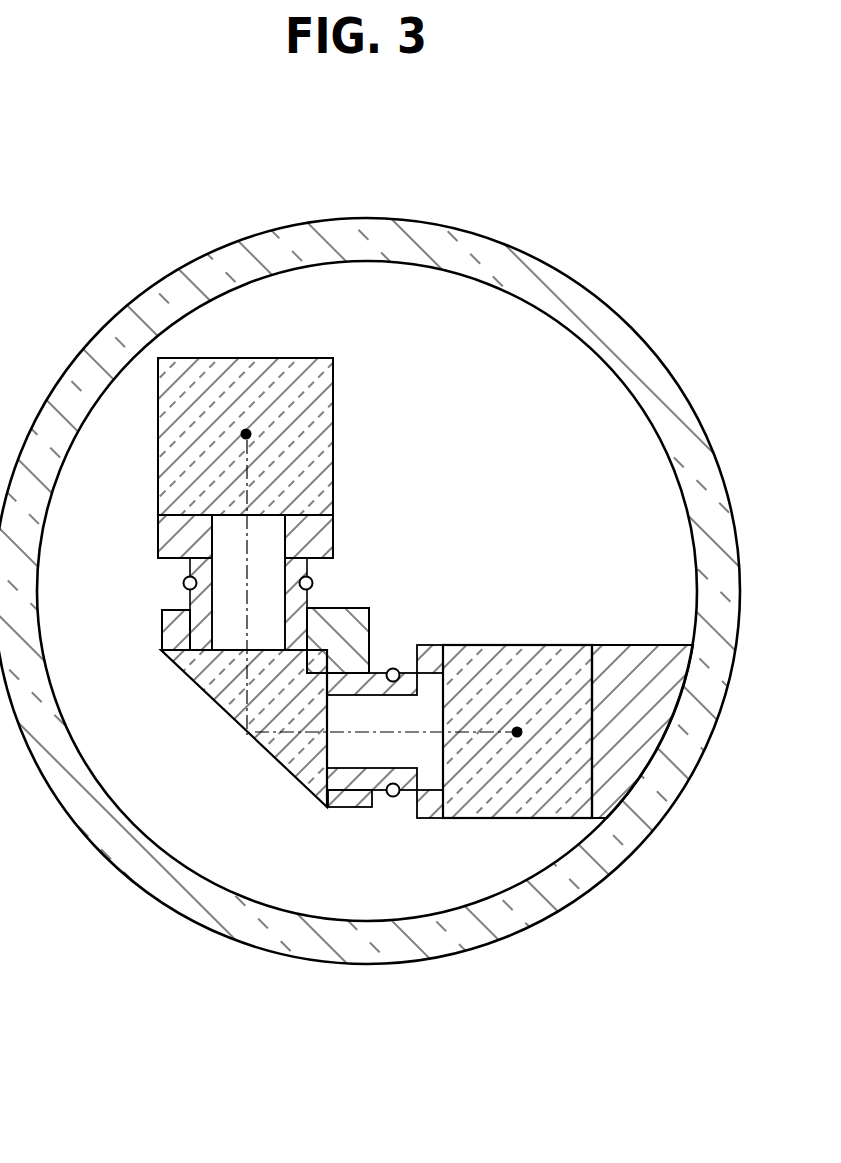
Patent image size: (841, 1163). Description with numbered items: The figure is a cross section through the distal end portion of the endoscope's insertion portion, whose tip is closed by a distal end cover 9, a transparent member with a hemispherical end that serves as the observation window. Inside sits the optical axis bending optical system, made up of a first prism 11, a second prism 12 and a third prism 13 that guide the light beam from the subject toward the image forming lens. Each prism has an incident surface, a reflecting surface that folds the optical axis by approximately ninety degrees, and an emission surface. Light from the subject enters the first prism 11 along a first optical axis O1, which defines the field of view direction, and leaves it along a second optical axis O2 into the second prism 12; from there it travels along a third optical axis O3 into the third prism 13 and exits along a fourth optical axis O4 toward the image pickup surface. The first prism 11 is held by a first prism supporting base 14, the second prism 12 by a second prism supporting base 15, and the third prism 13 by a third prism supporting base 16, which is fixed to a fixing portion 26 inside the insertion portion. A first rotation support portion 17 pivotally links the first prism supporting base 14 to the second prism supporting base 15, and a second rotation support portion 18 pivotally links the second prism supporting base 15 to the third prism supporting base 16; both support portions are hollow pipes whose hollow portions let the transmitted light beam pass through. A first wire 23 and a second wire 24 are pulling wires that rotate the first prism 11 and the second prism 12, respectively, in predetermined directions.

The distal end cover 9 is at (115, 328).
The first prism 11 is at (318, 362).
The second prism 12 is at (220, 700).
The third prism 13 is at (572, 657).
The first prism supporting base 14 is at (325, 538).
The second prism supporting base 15 is at (175, 628).
The third prism supporting base 16 is at (418, 645).
The first rotation support portion 17 is at (197, 605).
The second rotation support portion 18 is at (345, 795).
The first wire 23 is at (312, 583).
The second wire 24 is at (392, 798).
The fixing portion 26 is at (647, 653).
The first optical axis O1 is at (246, 434).
The second optical axis O2 is at (250, 543).
The third optical axis O3 is at (430, 732).
The fourth optical axis O4 is at (517, 726).